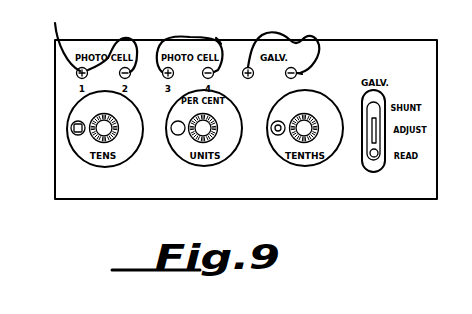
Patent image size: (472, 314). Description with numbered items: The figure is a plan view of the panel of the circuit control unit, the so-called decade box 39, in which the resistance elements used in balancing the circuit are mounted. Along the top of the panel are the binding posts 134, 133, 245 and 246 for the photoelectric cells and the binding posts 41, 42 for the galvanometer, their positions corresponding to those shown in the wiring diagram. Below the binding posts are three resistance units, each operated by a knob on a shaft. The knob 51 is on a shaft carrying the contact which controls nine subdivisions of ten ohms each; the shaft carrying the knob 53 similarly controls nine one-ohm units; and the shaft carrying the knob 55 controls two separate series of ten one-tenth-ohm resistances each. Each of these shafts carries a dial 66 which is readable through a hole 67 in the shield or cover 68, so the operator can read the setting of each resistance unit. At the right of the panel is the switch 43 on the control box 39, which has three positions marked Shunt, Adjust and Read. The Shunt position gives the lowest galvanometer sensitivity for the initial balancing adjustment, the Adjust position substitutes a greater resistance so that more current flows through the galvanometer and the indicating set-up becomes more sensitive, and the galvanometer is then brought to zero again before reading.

The binding post 134 is at (68, 40).
The binding post 133 is at (143, 68).
The binding post 245 is at (160, 58).
The binding post 246 is at (218, 42).
The binding post 41 is at (247, 62).
The binding post 42 is at (300, 75).
The knob 51 is at (97, 117).
The dial 66 is at (71, 127).
The hole 67 is at (75, 134).
The shield or cover 68 is at (85, 148).
The decade box 39 is at (132, 182).
The knob 53 is at (192, 137).
The knob 55 is at (289, 133).
The switch 43 is at (364, 169).